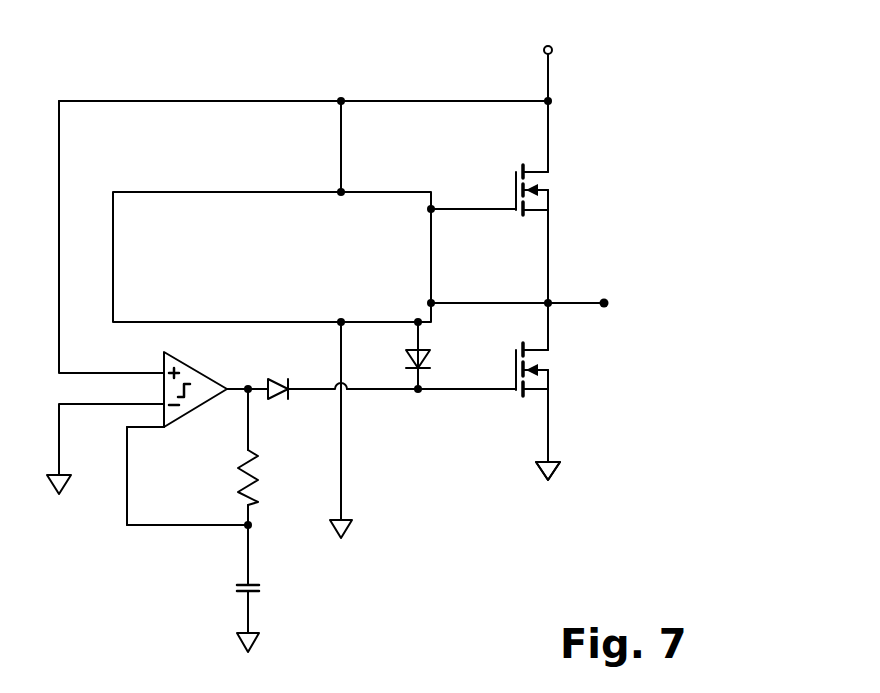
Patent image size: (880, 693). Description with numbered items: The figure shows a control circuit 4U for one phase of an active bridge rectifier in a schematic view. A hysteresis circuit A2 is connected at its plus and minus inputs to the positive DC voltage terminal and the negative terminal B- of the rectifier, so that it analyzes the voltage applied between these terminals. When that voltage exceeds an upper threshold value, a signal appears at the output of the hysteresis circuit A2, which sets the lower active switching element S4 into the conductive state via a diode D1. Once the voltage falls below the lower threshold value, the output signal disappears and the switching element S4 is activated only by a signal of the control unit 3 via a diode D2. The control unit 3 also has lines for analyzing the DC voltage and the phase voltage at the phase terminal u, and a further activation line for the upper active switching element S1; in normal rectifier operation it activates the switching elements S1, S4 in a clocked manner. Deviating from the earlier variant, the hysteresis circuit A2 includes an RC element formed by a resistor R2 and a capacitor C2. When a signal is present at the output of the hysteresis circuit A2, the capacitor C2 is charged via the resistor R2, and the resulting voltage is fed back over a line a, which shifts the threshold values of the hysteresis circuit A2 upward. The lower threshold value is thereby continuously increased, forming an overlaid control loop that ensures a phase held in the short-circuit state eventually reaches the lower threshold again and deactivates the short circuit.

The control circuit 4U is at (408, 80).
The control unit 3 is at (175, 192).
The phase terminal u is at (589, 305).
The DC voltage terminal B- is at (565, 477).
The active switching element S1 is at (574, 195).
The active switching element S4 is at (574, 370).
The hysteresis circuit A2 is at (196, 368).
The diode D1 is at (280, 383).
The diode D2 is at (426, 360).
The line a is at (127, 477).
The resistor R2 is at (258, 490).
The capacitor C2 is at (262, 591).